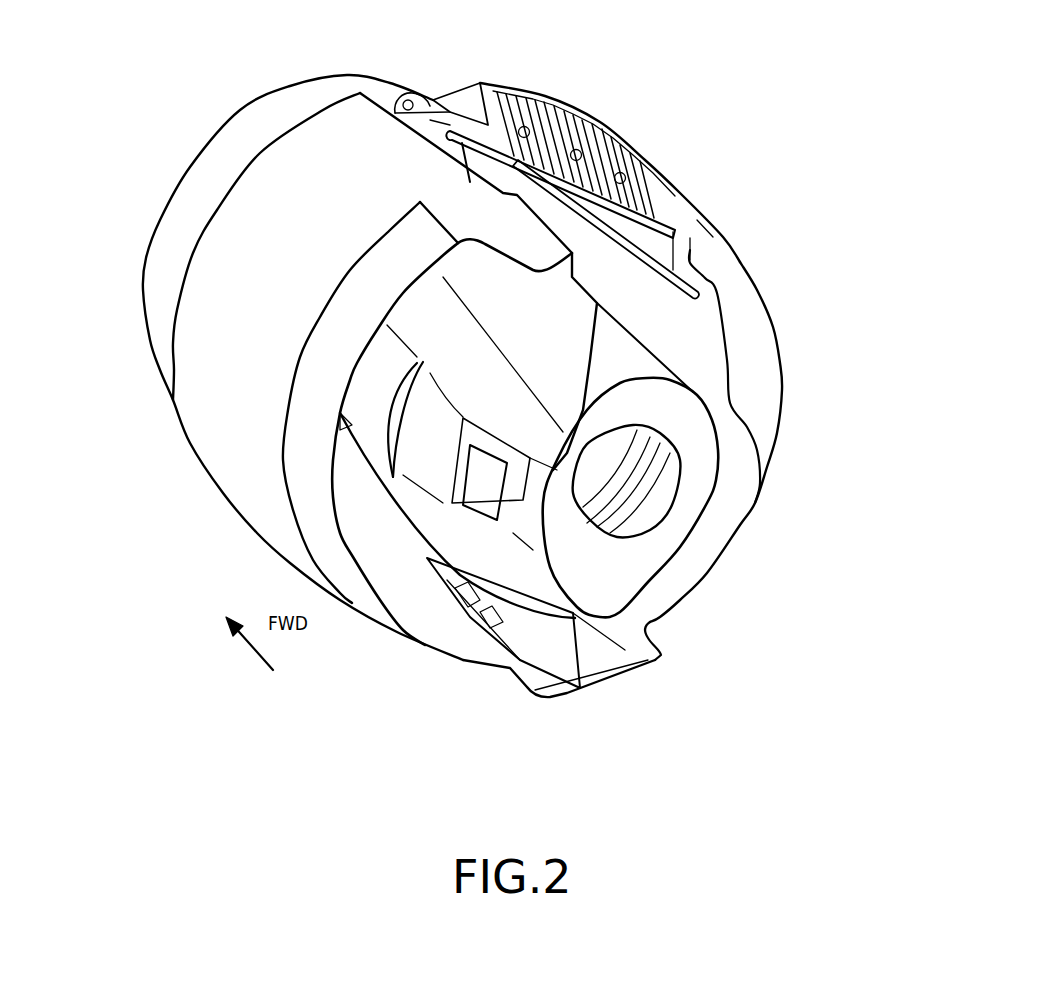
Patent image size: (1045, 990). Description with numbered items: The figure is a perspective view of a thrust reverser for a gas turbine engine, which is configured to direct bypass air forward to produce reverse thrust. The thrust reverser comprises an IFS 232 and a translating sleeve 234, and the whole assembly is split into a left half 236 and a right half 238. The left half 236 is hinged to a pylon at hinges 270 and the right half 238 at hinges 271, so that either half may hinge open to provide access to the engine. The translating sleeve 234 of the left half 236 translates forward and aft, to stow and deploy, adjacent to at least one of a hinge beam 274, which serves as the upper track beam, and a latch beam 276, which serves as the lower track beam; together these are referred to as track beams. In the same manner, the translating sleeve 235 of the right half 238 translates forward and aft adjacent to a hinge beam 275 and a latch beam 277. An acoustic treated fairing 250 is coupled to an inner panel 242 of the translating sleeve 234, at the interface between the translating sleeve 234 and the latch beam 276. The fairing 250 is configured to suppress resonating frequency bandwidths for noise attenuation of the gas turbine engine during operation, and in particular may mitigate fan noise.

The IFS 232 is at (513, 507).
The translating sleeve 234 is at (277, 527).
The translating sleeve 235 is at (640, 150).
The left half 236 is at (194, 479).
The right half 238 is at (720, 200).
The inner panel 242 is at (423, 600).
The fairing 250 is at (467, 617).
The hinges 270 is at (423, 127).
The hinges 271 is at (513, 130).
The hinge beam 274 is at (488, 178).
The hinge beam 275 is at (600, 150).
The latch beam 276 is at (580, 673).
The latch beam 277 is at (620, 667).